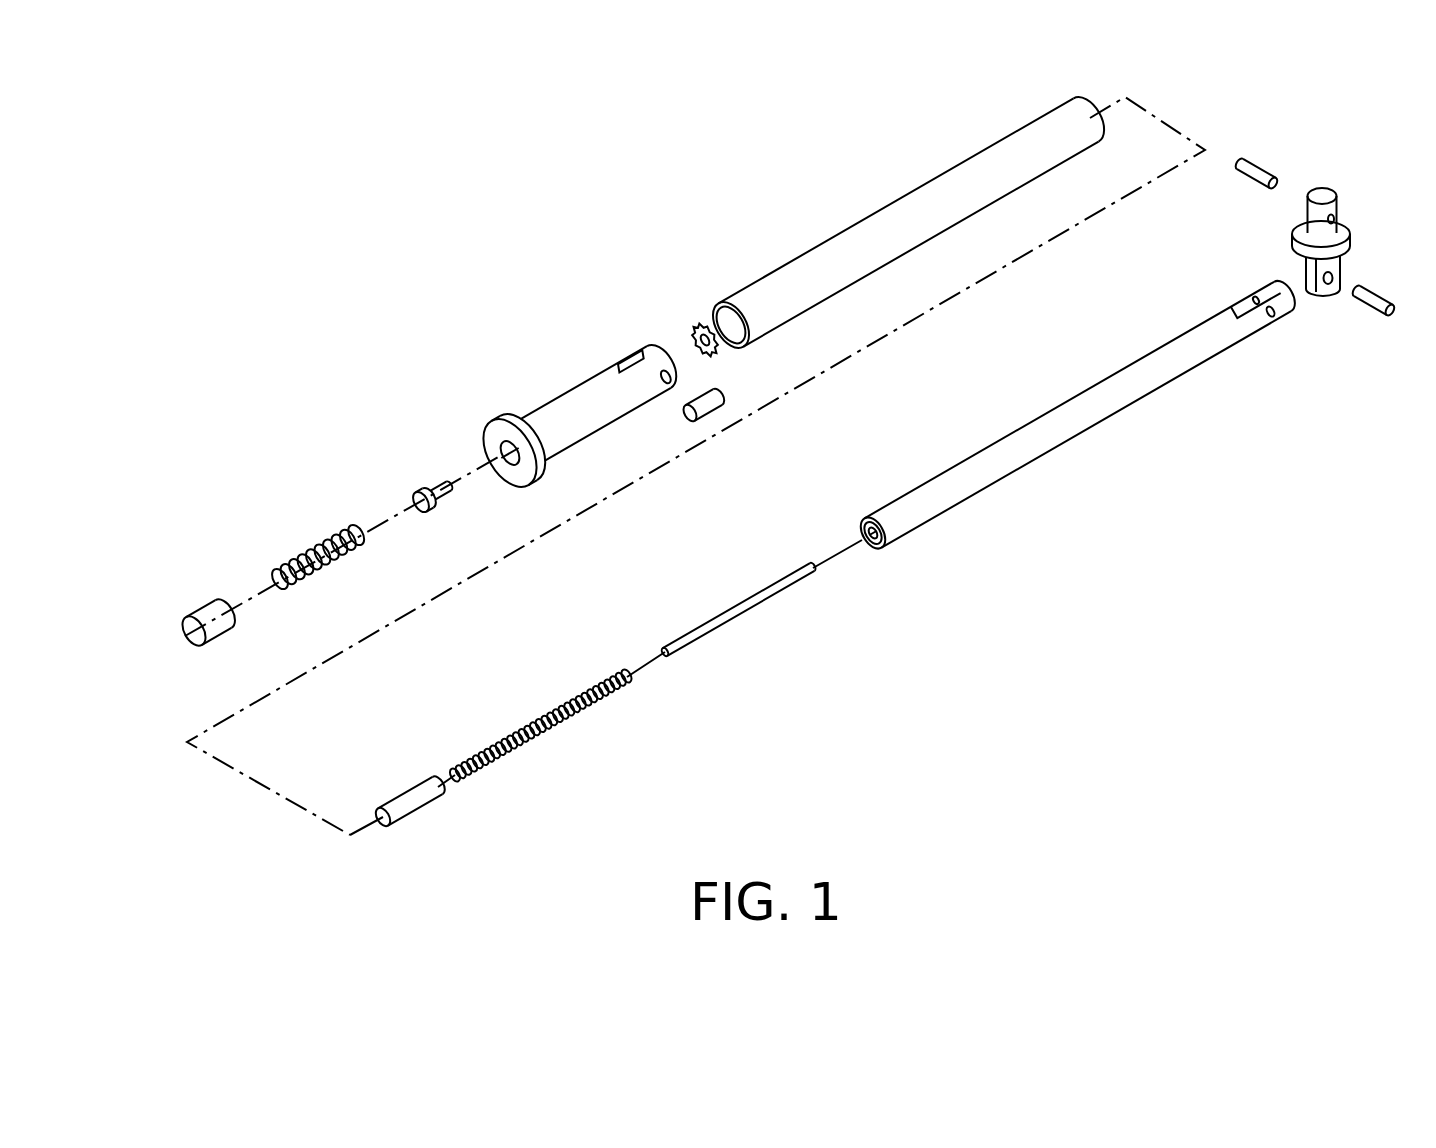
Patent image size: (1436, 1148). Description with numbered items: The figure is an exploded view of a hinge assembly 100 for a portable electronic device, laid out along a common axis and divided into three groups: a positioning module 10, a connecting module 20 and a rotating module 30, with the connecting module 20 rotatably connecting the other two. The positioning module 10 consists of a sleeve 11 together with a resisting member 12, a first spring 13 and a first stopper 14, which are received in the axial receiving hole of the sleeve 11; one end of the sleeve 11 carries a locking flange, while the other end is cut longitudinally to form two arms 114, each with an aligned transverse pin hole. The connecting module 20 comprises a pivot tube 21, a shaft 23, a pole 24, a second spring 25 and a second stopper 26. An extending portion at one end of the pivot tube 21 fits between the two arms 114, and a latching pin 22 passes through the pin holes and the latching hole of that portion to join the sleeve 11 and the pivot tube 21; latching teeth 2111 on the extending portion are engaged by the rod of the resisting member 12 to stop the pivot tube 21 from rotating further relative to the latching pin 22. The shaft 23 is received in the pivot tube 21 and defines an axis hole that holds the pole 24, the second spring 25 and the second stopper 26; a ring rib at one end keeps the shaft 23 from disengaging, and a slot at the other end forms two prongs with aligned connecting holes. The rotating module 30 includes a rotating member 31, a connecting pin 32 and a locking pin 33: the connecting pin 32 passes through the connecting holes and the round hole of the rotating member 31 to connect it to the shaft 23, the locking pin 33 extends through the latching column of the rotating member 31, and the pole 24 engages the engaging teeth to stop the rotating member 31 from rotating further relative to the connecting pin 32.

The hinge assembly 100 is at (540, 104).
The positioning module 10 is at (472, 372).
The sleeve 11 is at (561, 413).
The arm 114 is at (645, 383).
The resisting member 12 is at (430, 506).
The first spring 13 is at (300, 568).
The first stopper 14 is at (213, 618).
The connecting module 20 is at (965, 548).
The pivot tube 21 is at (909, 231).
The latching teeth 2111 is at (700, 321).
The latching pin 22 is at (700, 414).
The shaft 23 is at (1118, 448).
The pole 24 is at (679, 647).
The second spring 25 is at (528, 742).
The second stopper 26 is at (428, 796).
The rotating module 30 is at (1412, 176).
The rotating member 31 is at (1282, 219).
The connecting pin 32 is at (1371, 288).
The locking pin 33 is at (1268, 171).